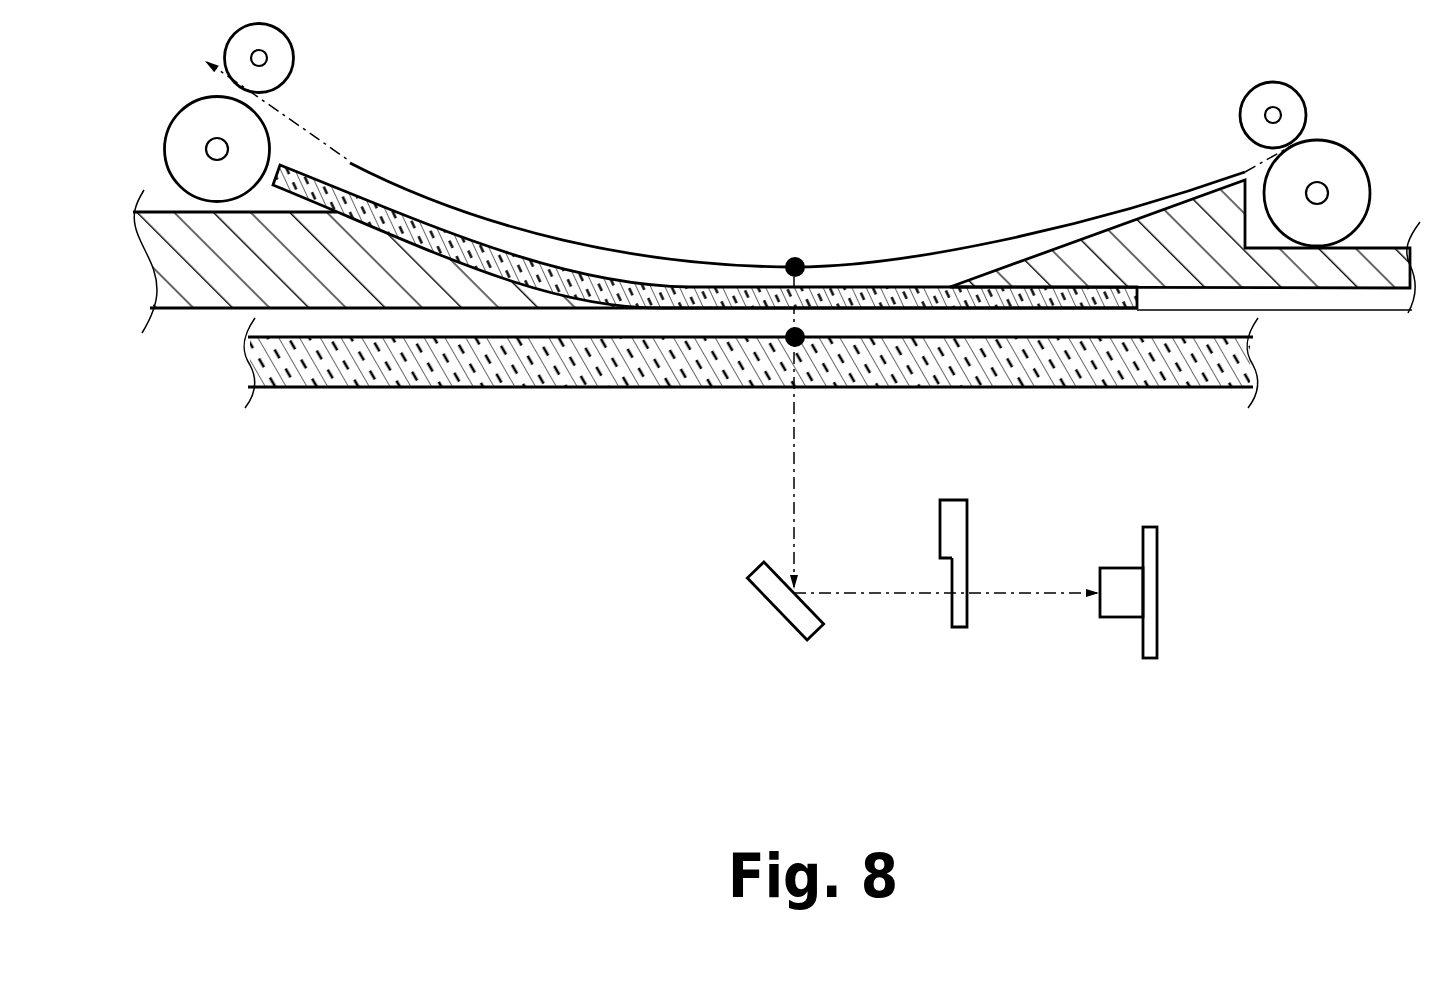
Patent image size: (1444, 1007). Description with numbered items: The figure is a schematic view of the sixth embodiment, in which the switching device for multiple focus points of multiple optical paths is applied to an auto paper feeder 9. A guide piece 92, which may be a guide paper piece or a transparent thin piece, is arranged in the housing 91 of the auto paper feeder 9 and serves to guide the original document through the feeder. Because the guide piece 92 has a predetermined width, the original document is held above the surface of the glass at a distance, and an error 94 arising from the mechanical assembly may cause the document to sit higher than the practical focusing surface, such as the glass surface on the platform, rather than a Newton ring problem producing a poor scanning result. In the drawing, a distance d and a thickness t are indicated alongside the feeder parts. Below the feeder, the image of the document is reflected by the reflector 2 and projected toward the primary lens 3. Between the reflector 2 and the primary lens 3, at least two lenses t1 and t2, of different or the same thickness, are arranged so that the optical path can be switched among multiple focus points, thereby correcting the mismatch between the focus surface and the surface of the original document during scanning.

The reflector 2 is at (785, 605).
The primary lens 3 is at (1150, 615).
The auto paper feeder 9 is at (1357, 369).
The housing 91 is at (1198, 222).
The guide piece 92 is at (652, 280).
The error 94 is at (875, 327).
The lens t1 is at (957, 627).
The lens t2 is at (960, 525).
The substrate thickness t is at (1253, 337).
The gap distance d is at (1391, 253).